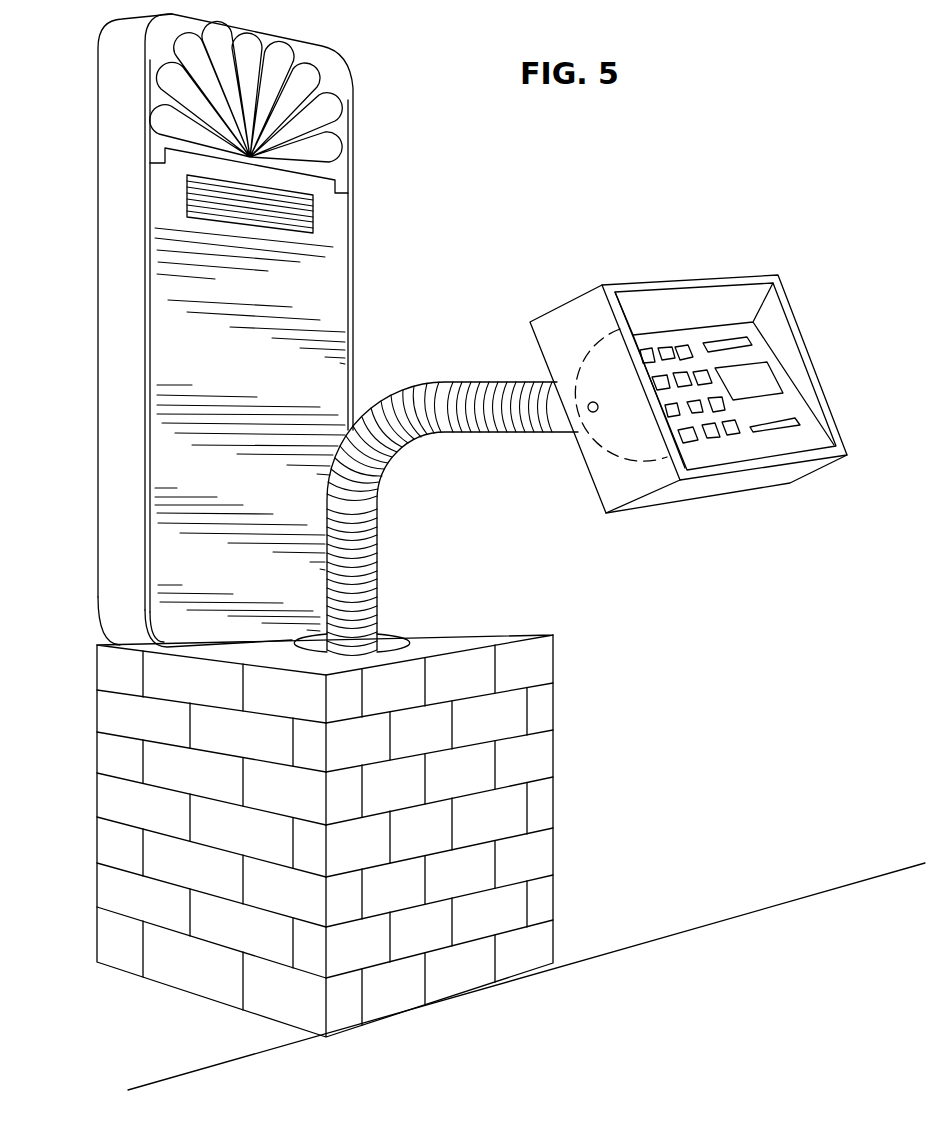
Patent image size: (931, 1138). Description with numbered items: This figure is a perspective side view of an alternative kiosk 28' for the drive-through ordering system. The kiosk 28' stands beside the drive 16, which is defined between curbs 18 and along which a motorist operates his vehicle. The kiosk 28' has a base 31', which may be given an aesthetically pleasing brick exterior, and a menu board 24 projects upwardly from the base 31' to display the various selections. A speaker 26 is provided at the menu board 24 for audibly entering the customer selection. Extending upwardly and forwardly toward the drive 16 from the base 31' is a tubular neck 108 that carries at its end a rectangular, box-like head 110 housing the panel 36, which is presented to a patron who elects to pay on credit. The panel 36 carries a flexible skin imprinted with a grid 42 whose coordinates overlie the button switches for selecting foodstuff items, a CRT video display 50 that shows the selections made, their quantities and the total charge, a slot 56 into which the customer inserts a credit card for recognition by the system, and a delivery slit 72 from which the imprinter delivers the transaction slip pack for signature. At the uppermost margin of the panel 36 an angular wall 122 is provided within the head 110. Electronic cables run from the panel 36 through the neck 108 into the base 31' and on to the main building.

The menu board 24 is at (353, 168).
The speaker 26 is at (303, 227).
The tubular neck 108 is at (352, 579).
The head 110 is at (632, 279).
The angular wall 122 is at (727, 297).
The grid 42 is at (678, 340).
The slot 56 is at (737, 340).
The CRT video display 50 is at (762, 363).
The delivery slit 72 is at (790, 415).
The panel 36 is at (765, 433).
The kiosk 28' is at (392, 648).
The base 31' is at (380, 836).
The curb 18 is at (667, 930).
The drive 16 is at (614, 1031).